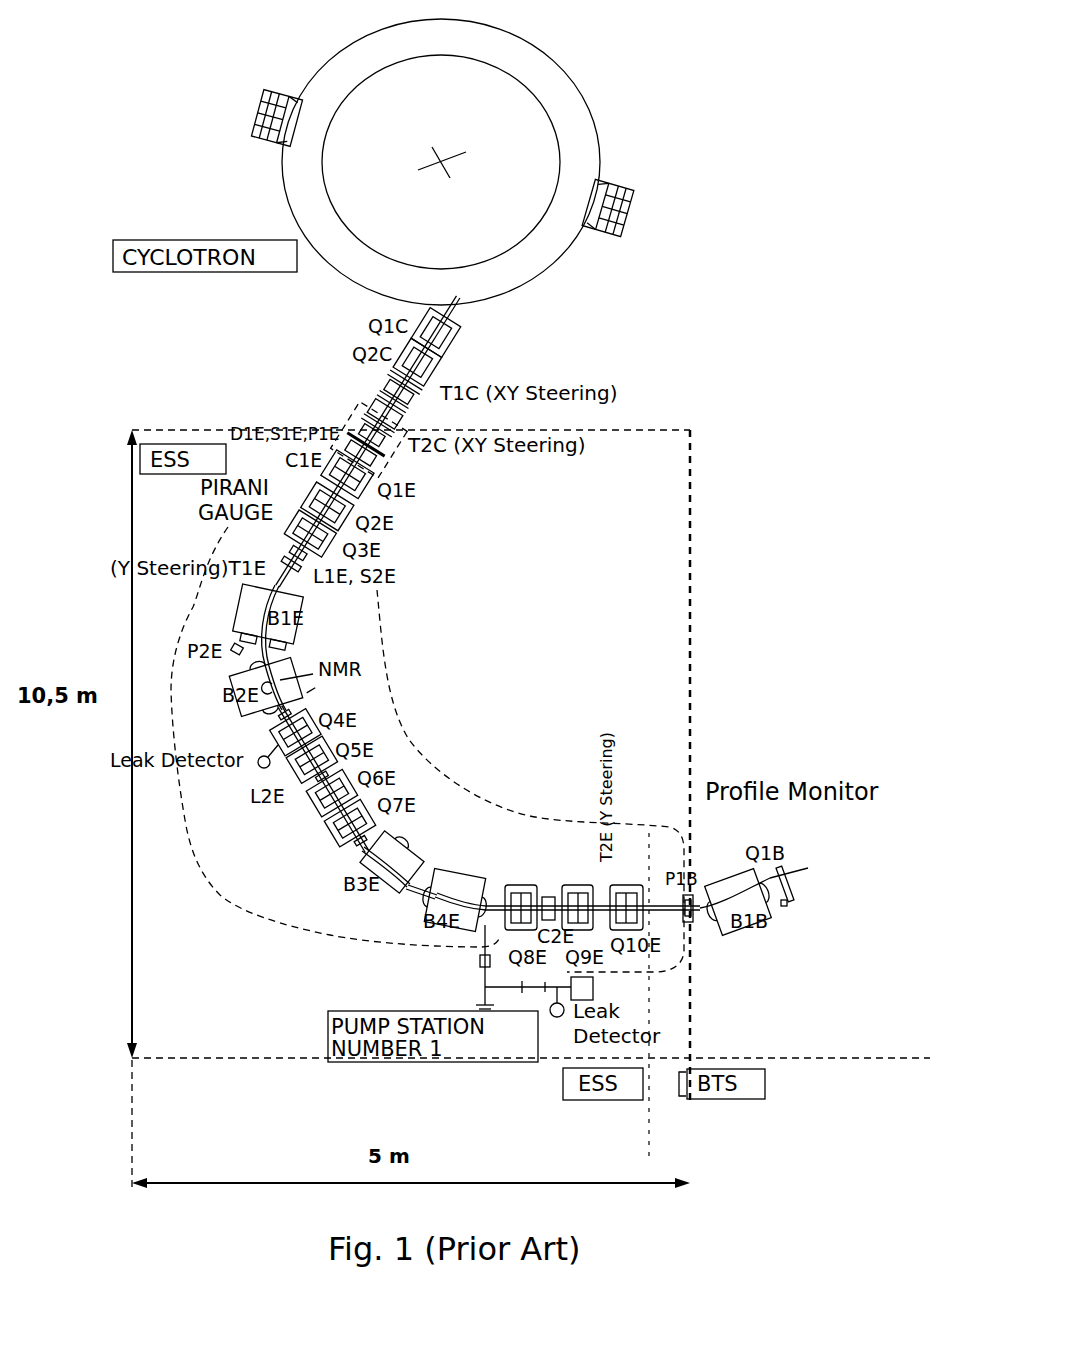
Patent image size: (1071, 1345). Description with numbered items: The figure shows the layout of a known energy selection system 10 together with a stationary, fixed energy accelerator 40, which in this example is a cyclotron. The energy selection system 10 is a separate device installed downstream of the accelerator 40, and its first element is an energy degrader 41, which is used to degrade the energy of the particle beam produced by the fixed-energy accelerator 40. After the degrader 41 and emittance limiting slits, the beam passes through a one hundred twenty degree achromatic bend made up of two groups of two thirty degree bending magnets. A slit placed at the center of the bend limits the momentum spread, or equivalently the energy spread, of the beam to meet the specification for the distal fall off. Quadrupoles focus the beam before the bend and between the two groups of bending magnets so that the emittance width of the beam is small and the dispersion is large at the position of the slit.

The fixed energy accelerator 40 is at (590, 72).
The energy degrader 41 is at (412, 463).
The energy selection system 10 is at (395, 693).